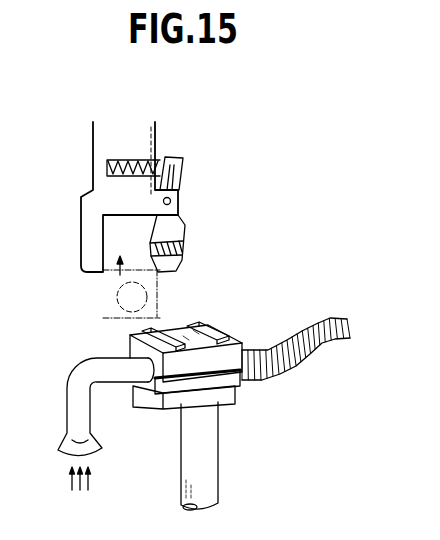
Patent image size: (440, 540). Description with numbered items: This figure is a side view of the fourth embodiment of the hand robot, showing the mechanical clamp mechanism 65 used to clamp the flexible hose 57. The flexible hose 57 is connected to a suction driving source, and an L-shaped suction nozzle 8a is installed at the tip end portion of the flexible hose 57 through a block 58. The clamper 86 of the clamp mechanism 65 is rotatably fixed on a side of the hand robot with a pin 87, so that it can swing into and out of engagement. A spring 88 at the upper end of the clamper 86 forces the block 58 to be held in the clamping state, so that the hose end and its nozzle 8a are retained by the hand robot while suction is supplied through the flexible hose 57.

The clamp mechanism 65 is at (190, 218).
The spring 88 is at (156, 157).
The pin 87 is at (179, 190).
The clamper 86 is at (173, 233).
The block 58 is at (195, 325).
The flexible hose 57 is at (285, 340).
The suction nozzle 8a is at (75, 400).